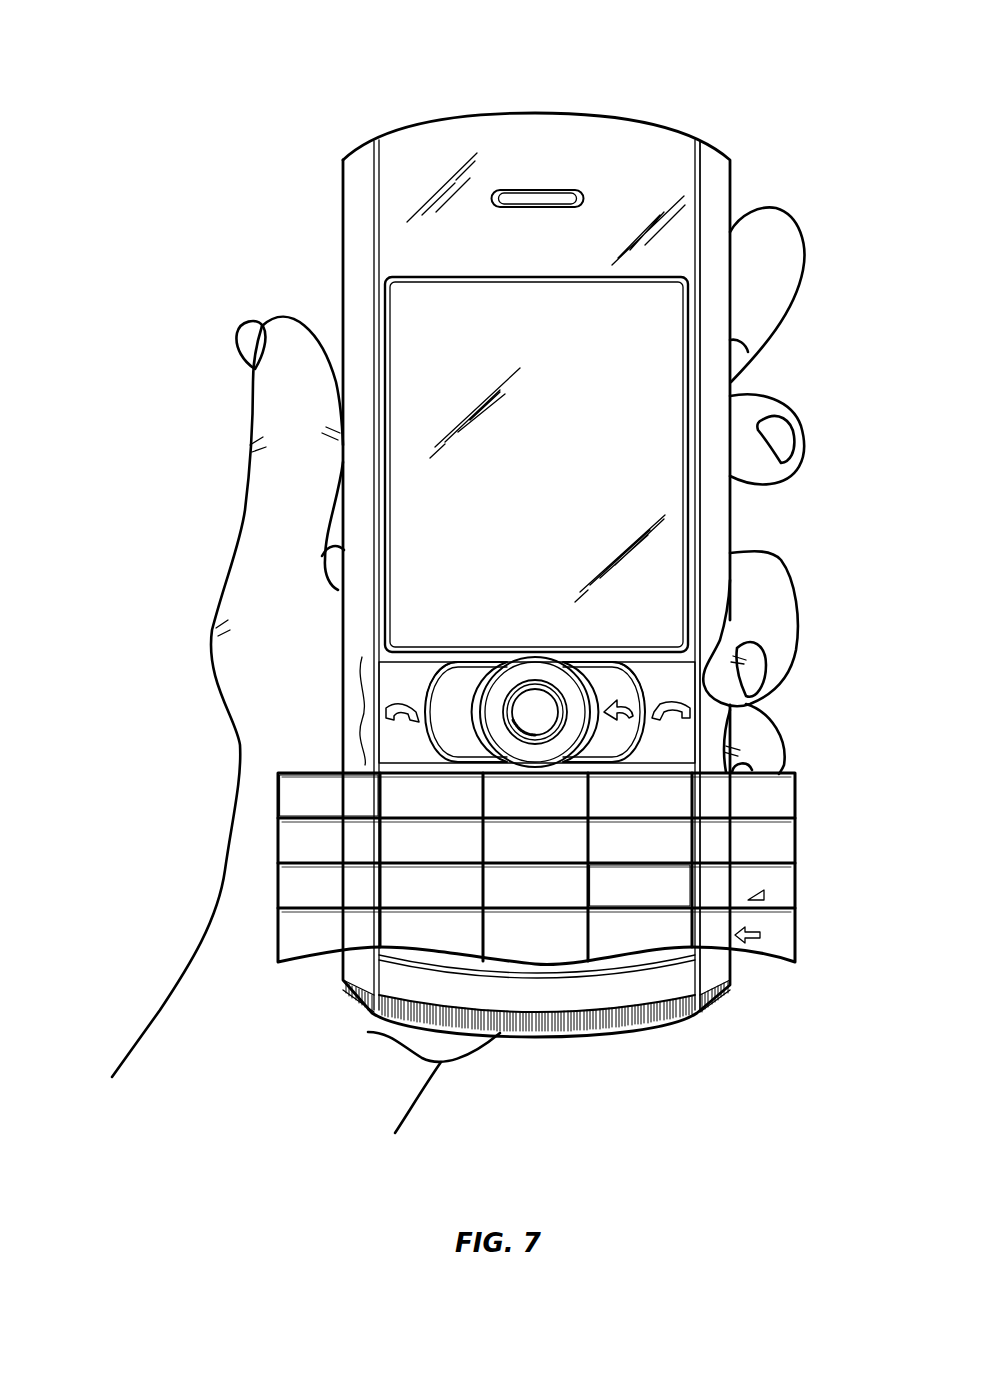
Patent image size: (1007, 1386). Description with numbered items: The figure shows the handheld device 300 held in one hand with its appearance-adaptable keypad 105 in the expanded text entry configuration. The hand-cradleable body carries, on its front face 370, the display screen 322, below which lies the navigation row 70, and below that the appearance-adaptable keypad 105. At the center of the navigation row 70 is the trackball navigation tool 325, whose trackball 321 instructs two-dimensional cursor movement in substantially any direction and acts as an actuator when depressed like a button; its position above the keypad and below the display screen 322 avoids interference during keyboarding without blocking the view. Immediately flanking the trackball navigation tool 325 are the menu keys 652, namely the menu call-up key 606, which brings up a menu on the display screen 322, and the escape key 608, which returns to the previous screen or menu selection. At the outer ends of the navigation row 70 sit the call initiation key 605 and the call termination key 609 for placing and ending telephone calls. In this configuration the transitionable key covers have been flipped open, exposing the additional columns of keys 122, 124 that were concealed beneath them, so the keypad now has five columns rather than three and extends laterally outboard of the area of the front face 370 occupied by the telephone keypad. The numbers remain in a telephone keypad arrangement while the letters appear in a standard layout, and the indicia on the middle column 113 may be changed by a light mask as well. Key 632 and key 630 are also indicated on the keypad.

The handheld device 300 is at (680, 53).
The front face 370 is at (714, 195).
The display screen 322 is at (663, 436).
The menu keys 652 is at (596, 672).
The navigation row 70 is at (362, 722).
The key 632 is at (303, 789).
The call initiation key 605 is at (407, 752).
The menu call-up key 606 is at (458, 733).
The additional columns of keys 122 is at (278, 887).
The call termination key 609 is at (667, 730).
The escape key 608 is at (627, 735).
The trackball navigation tool 325 is at (575, 706).
The trackball 321 is at (536, 707).
The additional columns of keys 124 is at (796, 888).
The middle column 113 is at (538, 966).
The appearance-adaptable keypad 105 is at (633, 985).
The shift key 630 is at (660, 883).